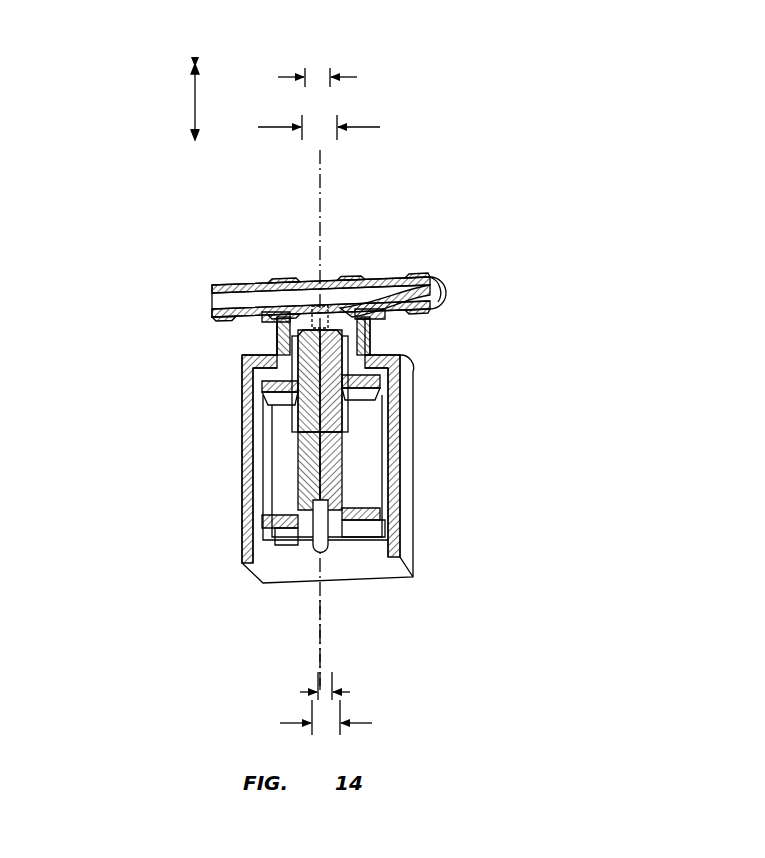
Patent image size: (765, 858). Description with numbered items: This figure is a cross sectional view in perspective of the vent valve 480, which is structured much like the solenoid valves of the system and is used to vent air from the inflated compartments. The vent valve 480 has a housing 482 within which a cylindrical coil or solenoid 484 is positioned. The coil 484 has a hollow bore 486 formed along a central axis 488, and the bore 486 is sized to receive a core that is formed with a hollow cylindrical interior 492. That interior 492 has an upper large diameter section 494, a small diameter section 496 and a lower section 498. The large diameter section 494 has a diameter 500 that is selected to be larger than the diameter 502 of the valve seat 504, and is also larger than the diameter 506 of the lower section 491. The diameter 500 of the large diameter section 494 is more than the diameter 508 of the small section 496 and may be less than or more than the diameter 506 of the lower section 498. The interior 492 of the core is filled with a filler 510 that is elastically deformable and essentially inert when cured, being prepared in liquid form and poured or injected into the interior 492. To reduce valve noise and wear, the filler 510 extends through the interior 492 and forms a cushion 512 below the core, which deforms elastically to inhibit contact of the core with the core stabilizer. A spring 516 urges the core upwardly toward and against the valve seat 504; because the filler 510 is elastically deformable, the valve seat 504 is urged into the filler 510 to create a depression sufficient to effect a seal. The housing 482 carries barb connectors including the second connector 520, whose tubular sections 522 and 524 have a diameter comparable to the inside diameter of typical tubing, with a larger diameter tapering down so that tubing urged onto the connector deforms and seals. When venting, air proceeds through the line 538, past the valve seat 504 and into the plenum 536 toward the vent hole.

The vent valve 480 is at (527, 406).
The housing 482 is at (355, 564).
The cylindrical coil or solenoid 484 is at (380, 462).
The hollow bore 486 is at (340, 428).
The central axis 488 is at (320, 635).
The lower section 491 is at (297, 497).
The hollow cylindrical interior 492 is at (292, 403).
The upper large diameter section 494 is at (434, 296).
The small diameter section 496 is at (379, 398).
The lower section 498 is at (344, 432).
The diameter of the large diameter section 500 is at (357, 127).
The diameter of the valve seat 502 is at (347, 77).
The valve seat 504 is at (277, 328).
The diameter of the lower section 506 is at (346, 692).
The diameter of the small section 508 is at (360, 723).
The filler 510 is at (298, 373).
The cushion 512 is at (295, 437).
The spring 516 is at (367, 334).
The second connector 520 is at (226, 266).
The tubular section 522 is at (388, 275).
The tubular section 524 is at (248, 283).
The plenum 536 is at (437, 282).
The line 538 is at (332, 298).